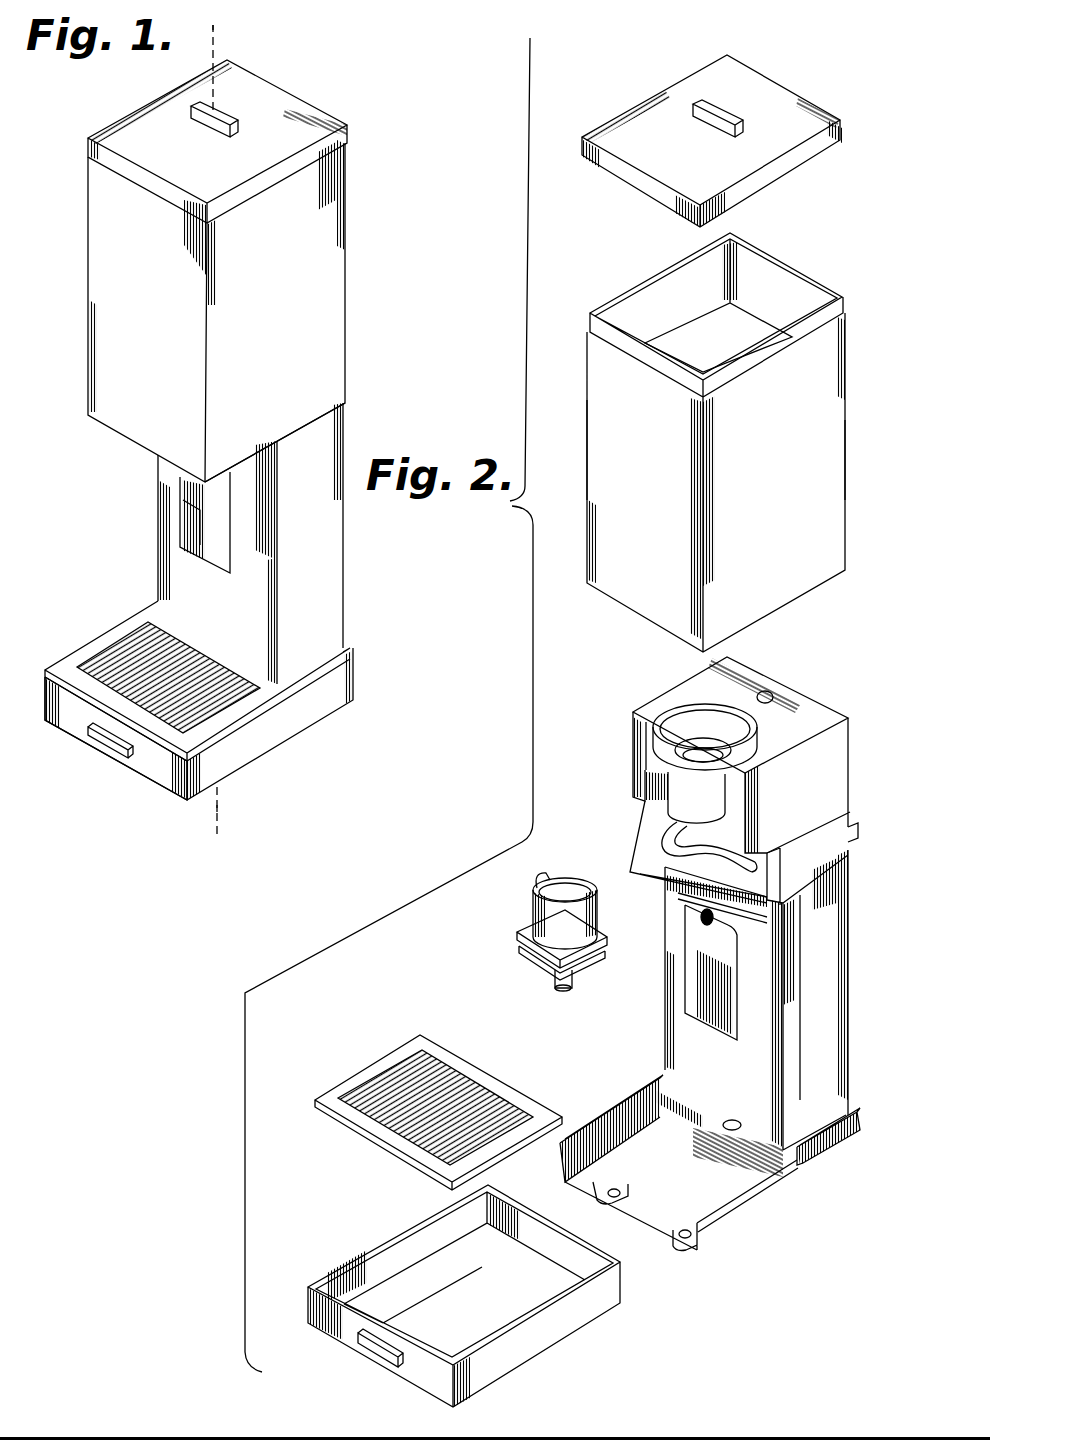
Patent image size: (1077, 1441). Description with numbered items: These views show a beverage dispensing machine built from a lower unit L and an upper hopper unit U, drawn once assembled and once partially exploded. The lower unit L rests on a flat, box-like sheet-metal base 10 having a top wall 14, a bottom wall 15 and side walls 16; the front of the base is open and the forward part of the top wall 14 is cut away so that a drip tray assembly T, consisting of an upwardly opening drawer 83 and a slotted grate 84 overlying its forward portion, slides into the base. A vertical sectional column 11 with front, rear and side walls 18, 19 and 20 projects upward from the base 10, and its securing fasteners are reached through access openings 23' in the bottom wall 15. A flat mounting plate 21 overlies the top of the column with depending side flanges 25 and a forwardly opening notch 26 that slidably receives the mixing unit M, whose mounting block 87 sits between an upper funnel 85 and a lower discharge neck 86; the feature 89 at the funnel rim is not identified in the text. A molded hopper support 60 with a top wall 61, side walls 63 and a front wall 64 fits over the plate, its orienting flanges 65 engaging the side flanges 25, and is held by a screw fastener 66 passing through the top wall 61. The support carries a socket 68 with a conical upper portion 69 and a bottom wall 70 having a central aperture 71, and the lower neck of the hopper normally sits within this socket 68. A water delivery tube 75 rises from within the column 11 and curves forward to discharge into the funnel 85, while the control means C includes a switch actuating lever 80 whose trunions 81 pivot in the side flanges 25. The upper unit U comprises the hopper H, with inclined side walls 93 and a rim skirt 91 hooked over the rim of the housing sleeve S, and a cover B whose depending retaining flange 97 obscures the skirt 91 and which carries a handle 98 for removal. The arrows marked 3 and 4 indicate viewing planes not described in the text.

In FIG. 1, the section line 3- 3 is at (212, 46).
In FIG. 1, the section line 4- 4 is at (220, 27).
In FIG. 1, the base section 10 is at (360, 675).
In FIG. 2, the base section 10 is at (818, 1179).
In FIG. 1, the column 11 is at (348, 544).
In FIG. 2, the column 11 is at (823, 913).
In FIG. 2, the top wall of base 14 is at (829, 1122).
In FIG. 2, the bottom wall of base 15 is at (722, 1146).
In FIG. 1, the side walls of base 16 is at (307, 715).
In FIG. 2, the side walls of base 16 is at (859, 1130).
In FIG. 1, the front wall of column 18 is at (160, 571).
In FIG. 2, the front wall of column 18 is at (686, 1038).
In FIG. 1, the rear wall of column 19 is at (349, 428).
In FIG. 1, the side walls of column 20 is at (325, 572).
In FIG. 2, the side walls of column 20 is at (841, 1037).
In FIG. 2, the mounting plate 21 is at (666, 834).
In FIG. 2, the access openings 23' is at (741, 1097).
In FIG. 2, the side flanges of mounting plate 25 is at (858, 865).
In FIG. 2, the notch 26 is at (648, 880).
In FIG. 2, the hopper support 60 is at (828, 703).
In FIG. 2, the top wall of hopper support 61 is at (648, 706).
In FIG. 2, the side walls of hopper support 63 is at (846, 795).
In FIG. 2, the front wall of hopper support 64 is at (636, 736).
In FIG. 2, the orienting flanges 65 is at (856, 830).
In FIG. 2, the screw fastener 66 is at (771, 694).
In FIG. 2, the socket 68 is at (851, 711).
In FIG. 2, the conical upper portion of socket 69 is at (690, 712).
In FIG. 2, the bottom wall of socket 70 is at (718, 740).
In FIG. 2, the central aperture 71 is at (748, 748).
In FIG. 2, the water delivery tube 75 is at (740, 810).
In FIG. 1, the switch actuating lever 80 is at (180, 507).
In FIG. 2, the switch actuating lever 80 is at (692, 995).
In FIG. 2, the trunions 81 is at (779, 913).
In FIG. 1, the drawer 83 is at (163, 787).
In FIG. 2, the drawer 83 is at (606, 1300).
In FIG. 1, the slotted cover or grate 84 is at (102, 630).
In FIG. 2, the slotted cover or grate 84 is at (373, 1068).
In FIG. 2, the funnel 85 is at (534, 915).
In FIG. 2, the discharge neck 86 is at (553, 985).
In FIG. 2, the mounting block 87 is at (520, 958).
In FIG. 2, the tab 89 is at (546, 876).
In FIG. 2, the rim skirt 91 is at (844, 308).
In FIG. 2, the side walls of hopper 93 is at (758, 325).
In FIG. 1, the retaining flange 97 is at (350, 126).
In FIG. 2, the retaining flange 97 is at (843, 130).
In FIG. 1, the handle 98 is at (192, 121).
In FIG. 2, the handle 98 is at (746, 110).
In FIG. 1, the cover B is at (326, 101).
In FIG. 2, the cover B is at (628, 103).
In FIG. 1, the control means C is at (182, 490).
In FIG. 2, the control means C is at (688, 972).
In FIG. 2, the hopper H is at (793, 263).
In FIG. 1, the lower unit L is at (350, 608).
In FIG. 2, the lower unit L is at (850, 973).
In FIG. 2, the mixing unit M is at (525, 904).
In FIG. 1, the housing sleeve S is at (347, 281).
In FIG. 2, the housing sleeve S is at (849, 415).
In FIG. 1, the drip tray assembly T is at (119, 768).
In FIG. 2, the drip tray assembly T is at (370, 1242).
In FIG. 1, the upper hopper unit U is at (349, 213).
In FIG. 2, the upper hopper unit U is at (849, 498).